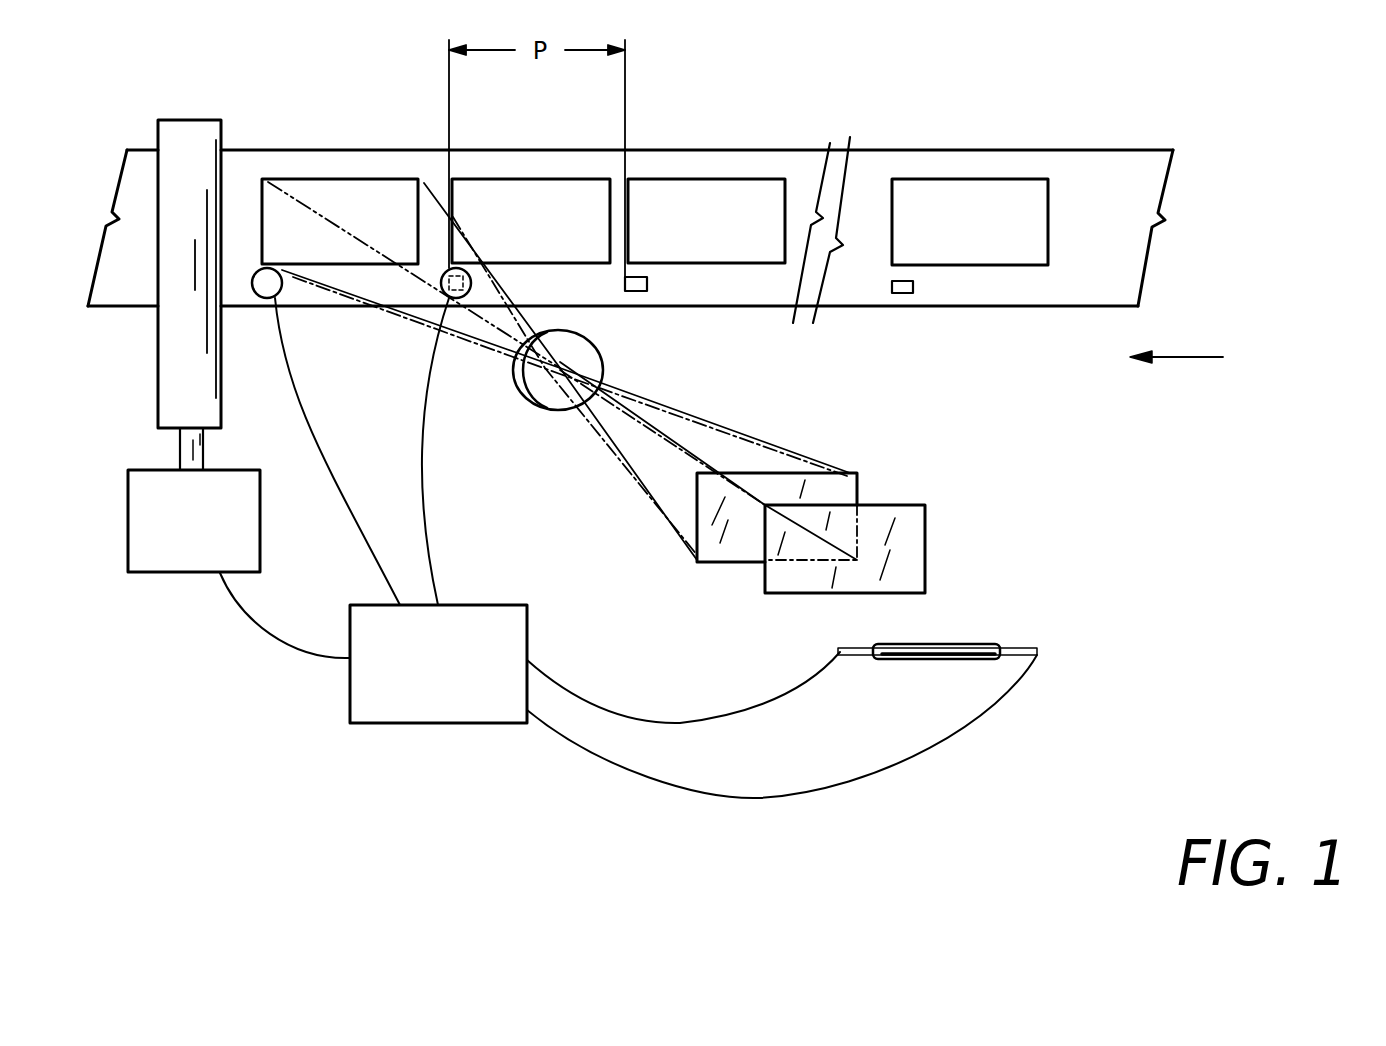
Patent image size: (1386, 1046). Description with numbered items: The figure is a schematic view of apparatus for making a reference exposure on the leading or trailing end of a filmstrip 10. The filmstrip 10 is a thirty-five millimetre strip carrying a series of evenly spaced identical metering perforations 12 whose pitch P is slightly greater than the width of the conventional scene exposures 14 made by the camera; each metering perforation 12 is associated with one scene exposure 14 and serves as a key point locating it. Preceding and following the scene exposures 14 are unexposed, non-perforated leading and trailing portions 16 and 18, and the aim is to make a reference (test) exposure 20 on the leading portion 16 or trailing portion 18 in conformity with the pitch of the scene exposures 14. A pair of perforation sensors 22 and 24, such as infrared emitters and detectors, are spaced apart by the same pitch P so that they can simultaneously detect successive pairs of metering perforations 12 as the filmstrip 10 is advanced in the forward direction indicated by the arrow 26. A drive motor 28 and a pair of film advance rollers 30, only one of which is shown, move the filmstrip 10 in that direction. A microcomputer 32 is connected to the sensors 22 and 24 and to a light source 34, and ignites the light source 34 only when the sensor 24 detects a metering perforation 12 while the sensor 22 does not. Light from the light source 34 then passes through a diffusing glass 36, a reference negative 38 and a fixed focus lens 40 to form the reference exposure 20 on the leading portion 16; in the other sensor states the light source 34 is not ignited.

The filmstrip 10 is at (780, 97).
The metering perforations 12 is at (625, 284).
The scene exposures 14 is at (483, 190).
The leading non-perforated portion 16 is at (265, 157).
The trailing non-perforated portion 18 is at (1118, 168).
The reference exposure 20 is at (343, 183).
The perforation sensor 22 is at (280, 295).
The perforation sensor 24 is at (478, 268).
The forward direction arrow 26 is at (1223, 357).
The drive motor 28 is at (142, 513).
The film advance roller 30 is at (170, 370).
The microcomputer 32 is at (423, 712).
The light source 34 is at (990, 645).
The diffusing glass 36 is at (917, 508).
The reference negative 38 is at (823, 480).
The fixed focus lens 40 is at (537, 387).